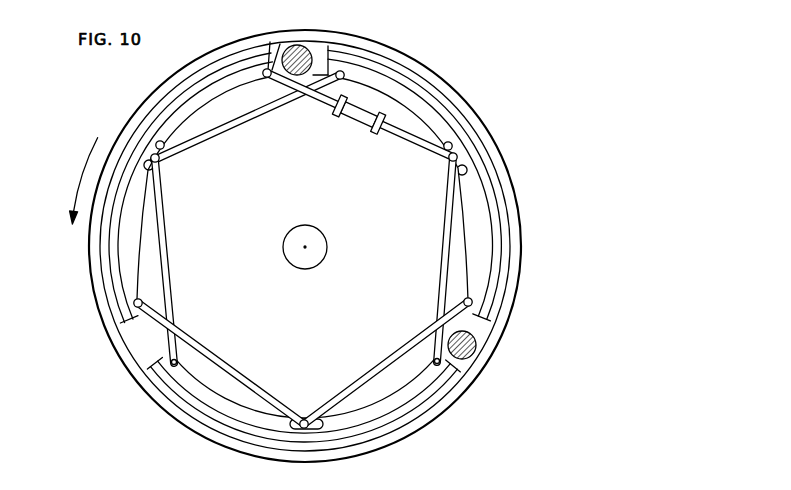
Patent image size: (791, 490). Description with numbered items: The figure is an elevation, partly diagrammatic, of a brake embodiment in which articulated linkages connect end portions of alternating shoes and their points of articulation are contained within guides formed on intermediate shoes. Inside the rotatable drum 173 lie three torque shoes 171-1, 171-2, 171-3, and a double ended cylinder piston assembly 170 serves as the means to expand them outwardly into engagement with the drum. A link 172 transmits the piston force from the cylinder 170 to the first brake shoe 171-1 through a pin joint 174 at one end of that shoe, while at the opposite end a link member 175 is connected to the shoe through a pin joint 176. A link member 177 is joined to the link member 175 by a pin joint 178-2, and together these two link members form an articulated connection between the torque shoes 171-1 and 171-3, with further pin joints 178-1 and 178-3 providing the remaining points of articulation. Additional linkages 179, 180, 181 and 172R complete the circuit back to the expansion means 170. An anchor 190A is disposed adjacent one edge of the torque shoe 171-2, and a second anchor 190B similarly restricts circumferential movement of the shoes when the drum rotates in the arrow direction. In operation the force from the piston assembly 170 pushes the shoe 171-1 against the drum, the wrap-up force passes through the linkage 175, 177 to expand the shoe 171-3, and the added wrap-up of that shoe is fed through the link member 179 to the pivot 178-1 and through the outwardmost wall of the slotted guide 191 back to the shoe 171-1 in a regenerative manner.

The double ended cylinder piston assembly 170 is at (362, 125).
The first brake shoe 171-1 is at (141, 262).
The torque shoe 171-2 is at (257, 408).
The torque shoe 171-3 is at (477, 228).
The link 172 is at (323, 102).
The linkage 172R is at (412, 140).
The rotatable drum 173 is at (93, 258).
The pin joint 174 is at (273, 42).
The link member 175 is at (228, 362).
The pin joint 176 is at (142, 301).
The link member 177 is at (390, 355).
The pivot 178-1 is at (162, 162).
The pin joint 178-2 is at (305, 419).
The pin joint 178-3 is at (447, 164).
The link member 179 is at (257, 117).
The linkage 180 is at (170, 210).
The linkage 181 is at (443, 273).
The anchor 190A is at (470, 353).
The anchor 190B is at (308, 53).
The slotted guide 191 is at (157, 143).